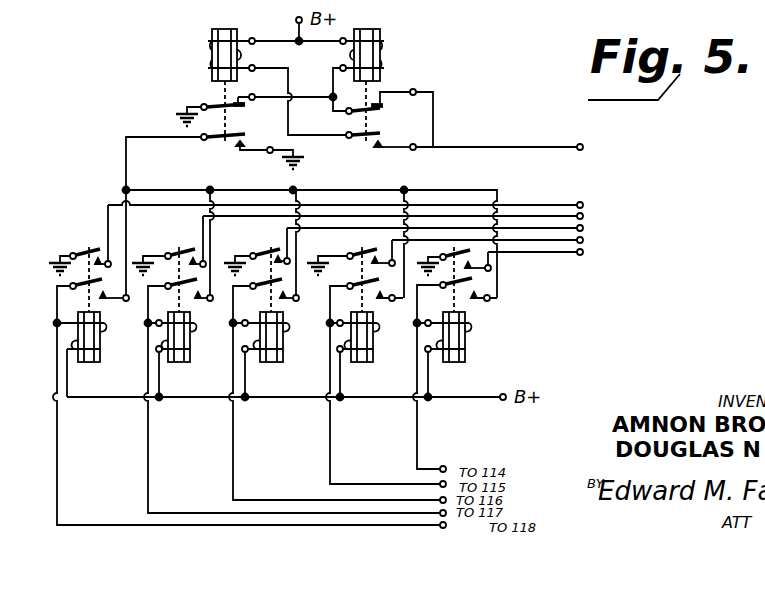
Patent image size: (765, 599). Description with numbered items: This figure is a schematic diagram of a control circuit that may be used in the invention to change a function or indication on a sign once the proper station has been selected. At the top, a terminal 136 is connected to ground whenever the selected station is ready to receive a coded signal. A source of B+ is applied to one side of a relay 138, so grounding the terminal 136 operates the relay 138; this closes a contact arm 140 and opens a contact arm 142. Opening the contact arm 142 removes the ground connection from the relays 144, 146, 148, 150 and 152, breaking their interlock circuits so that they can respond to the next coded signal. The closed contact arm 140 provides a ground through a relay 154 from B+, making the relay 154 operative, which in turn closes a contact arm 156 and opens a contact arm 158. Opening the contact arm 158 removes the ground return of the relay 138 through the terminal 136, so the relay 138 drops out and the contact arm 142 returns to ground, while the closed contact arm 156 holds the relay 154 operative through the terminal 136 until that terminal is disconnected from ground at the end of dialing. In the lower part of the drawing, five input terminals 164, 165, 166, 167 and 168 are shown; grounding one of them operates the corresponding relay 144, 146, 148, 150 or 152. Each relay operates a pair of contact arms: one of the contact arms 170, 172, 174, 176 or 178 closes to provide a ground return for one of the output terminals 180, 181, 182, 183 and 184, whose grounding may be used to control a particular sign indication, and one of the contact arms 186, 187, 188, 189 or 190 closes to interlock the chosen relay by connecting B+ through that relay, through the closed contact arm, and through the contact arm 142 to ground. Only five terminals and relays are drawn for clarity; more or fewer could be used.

The terminal 136 is at (583, 147).
The relay 138 is at (211, 48).
The contact arm 140 is at (218, 104).
The contact arm 142 is at (238, 134).
The relay 144 is at (100, 356).
The relay 146 is at (191, 356).
The relay 148 is at (283, 356).
The relay 150 is at (373, 354).
The relay 152 is at (466, 350).
The relay 154 is at (381, 50).
The contact arm 156 is at (381, 114).
The contact arm 158 is at (366, 142).
The input terminal 164 is at (443, 466).
The input terminal 165 is at (440, 484).
The input terminal 166 is at (440, 500).
The input terminal 167 is at (440, 512).
The input terminal 168 is at (446, 525).
The contact arm 170 is at (88, 248).
The contact arm 172 is at (186, 248).
The contact arm 174 is at (270, 248).
The contact arm 176 is at (366, 248).
The contact arm 178 is at (463, 250).
The terminal 180 is at (583, 204).
The terminal 181 is at (583, 216).
The terminal 182 is at (583, 228).
The terminal 183 is at (583, 240).
The terminal 184 is at (583, 253).
The contact arm 186 is at (100, 300).
The contact arm 187 is at (190, 300).
The contact arm 188 is at (278, 300).
The contact arm 189 is at (374, 280).
The contact arm 190 is at (468, 300).